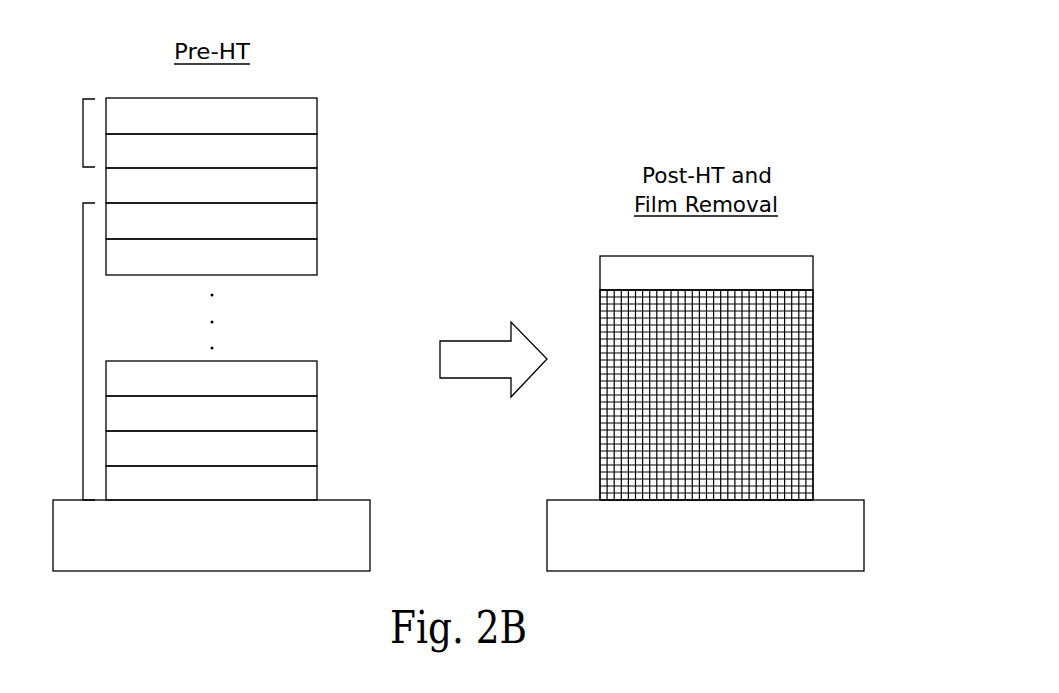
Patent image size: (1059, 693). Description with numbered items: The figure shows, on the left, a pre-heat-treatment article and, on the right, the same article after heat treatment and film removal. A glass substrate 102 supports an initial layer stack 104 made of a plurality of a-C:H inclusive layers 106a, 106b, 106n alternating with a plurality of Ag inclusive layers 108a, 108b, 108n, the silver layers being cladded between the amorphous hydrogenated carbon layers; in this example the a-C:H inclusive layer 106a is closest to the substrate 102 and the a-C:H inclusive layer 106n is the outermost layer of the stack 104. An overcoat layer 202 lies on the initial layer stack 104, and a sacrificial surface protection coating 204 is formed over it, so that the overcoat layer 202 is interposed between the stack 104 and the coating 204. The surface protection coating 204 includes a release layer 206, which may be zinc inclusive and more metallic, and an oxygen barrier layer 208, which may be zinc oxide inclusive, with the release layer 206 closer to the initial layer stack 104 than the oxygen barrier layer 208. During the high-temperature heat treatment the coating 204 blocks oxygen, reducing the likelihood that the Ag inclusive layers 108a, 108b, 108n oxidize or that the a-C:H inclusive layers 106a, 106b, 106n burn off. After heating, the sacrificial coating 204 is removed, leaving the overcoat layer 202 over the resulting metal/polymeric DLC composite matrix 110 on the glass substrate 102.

The glass substrate 102 is at (371, 538).
The initial layer stack 104 is at (83, 353).
The a-C:H inclusive layer 106a is at (317, 483).
The a-C:H inclusive layer 106b is at (317, 413).
The a-C:H inclusive layer 106n is at (317, 222).
The Ag inclusive layer 108a is at (317, 448).
The Ag inclusive layer 108b is at (317, 378).
The Ag inclusive layer 108n is at (317, 258).
The composite matrix 110 is at (813, 395).
The overcoat layer 202 is at (317, 187).
The surface protection coating 204 is at (83, 133).
The release layer 206 is at (317, 152).
The oxygen barrier layer 208 is at (317, 117).